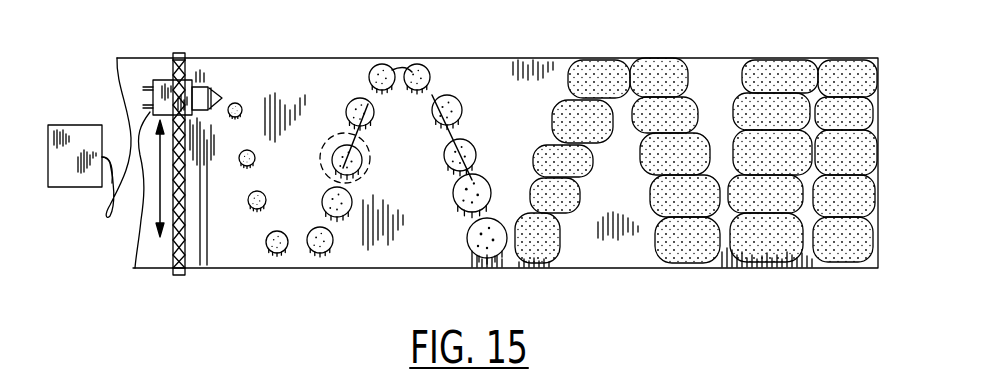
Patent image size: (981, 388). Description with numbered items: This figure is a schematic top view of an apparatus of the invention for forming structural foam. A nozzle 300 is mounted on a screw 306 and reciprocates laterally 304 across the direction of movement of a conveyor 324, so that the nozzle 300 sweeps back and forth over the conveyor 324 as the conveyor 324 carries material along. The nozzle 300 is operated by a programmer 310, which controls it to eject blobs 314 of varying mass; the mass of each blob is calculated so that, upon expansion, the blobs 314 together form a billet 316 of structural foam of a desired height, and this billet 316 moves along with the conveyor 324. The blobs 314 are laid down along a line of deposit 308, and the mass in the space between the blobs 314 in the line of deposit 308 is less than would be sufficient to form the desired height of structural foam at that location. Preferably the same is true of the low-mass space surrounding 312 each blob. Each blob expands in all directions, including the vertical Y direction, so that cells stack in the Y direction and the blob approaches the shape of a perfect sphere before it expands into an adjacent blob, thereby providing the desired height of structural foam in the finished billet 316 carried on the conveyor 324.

The nozzle 300 is at (163, 93).
The lateral reciprocation 304 is at (162, 182).
The screw 306 is at (186, 60).
The line of deposit 308 is at (468, 117).
The programmer 310 is at (72, 177).
The low-mass space surrounding a blob 312 is at (373, 172).
The blobs 314 is at (248, 153).
The billet 316 is at (842, 75).
The conveyor 324 is at (517, 115).